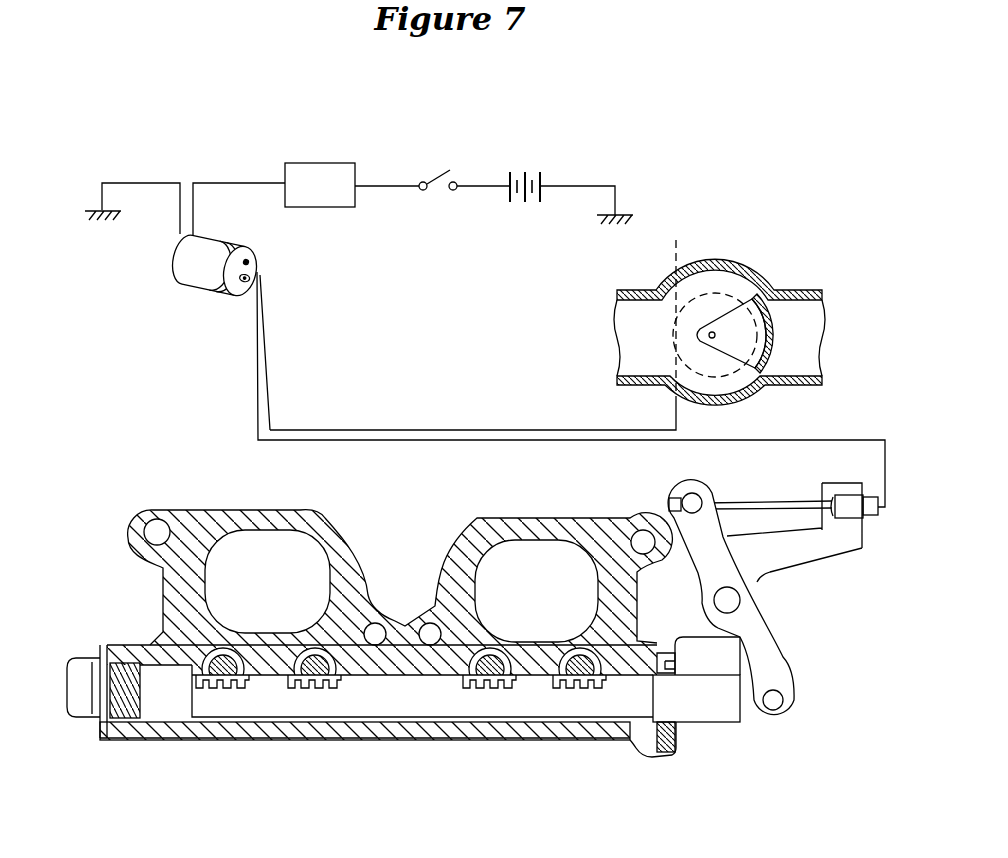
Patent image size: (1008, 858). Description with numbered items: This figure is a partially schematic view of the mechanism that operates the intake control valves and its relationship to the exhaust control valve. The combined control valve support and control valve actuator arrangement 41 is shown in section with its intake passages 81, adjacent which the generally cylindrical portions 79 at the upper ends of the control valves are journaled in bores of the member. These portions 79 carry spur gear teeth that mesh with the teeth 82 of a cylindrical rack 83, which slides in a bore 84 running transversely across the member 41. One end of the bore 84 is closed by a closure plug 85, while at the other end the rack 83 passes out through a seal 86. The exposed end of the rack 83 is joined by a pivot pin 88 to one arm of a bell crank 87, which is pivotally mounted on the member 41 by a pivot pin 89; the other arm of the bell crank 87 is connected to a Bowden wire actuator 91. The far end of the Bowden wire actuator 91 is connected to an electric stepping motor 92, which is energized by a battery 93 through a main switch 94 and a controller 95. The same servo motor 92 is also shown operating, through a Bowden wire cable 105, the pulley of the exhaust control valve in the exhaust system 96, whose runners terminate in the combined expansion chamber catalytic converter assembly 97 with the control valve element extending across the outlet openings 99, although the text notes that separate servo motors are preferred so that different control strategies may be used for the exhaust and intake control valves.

The combined control valve support and control valve actuator arrangement 41 is at (252, 510).
The generally cylindrical portions 79 is at (260, 646).
The intake passages 81 is at (265, 567).
The teeth 82 is at (460, 675).
The cylindrical rack 83 is at (370, 710).
The bore 84 is at (161, 720).
The closure plug 85 is at (93, 656).
The seal 86 is at (678, 737).
The bell crank 87 is at (783, 672).
The pivot pin 88 is at (791, 699).
The pivot pin 89 is at (757, 605).
The Bowden wire actuator 91 is at (383, 440).
The electric stepping motor 92 is at (193, 288).
The battery 93 is at (527, 176).
The main switch 94 is at (449, 172).
The controller 95 is at (308, 163).
The exhaust system 96 is at (638, 291).
The combined expansion chamber catalytic converter assembly 97 is at (727, 263).
The outlet openings 99 is at (767, 334).
The Bowden wire cable 105 is at (497, 430).